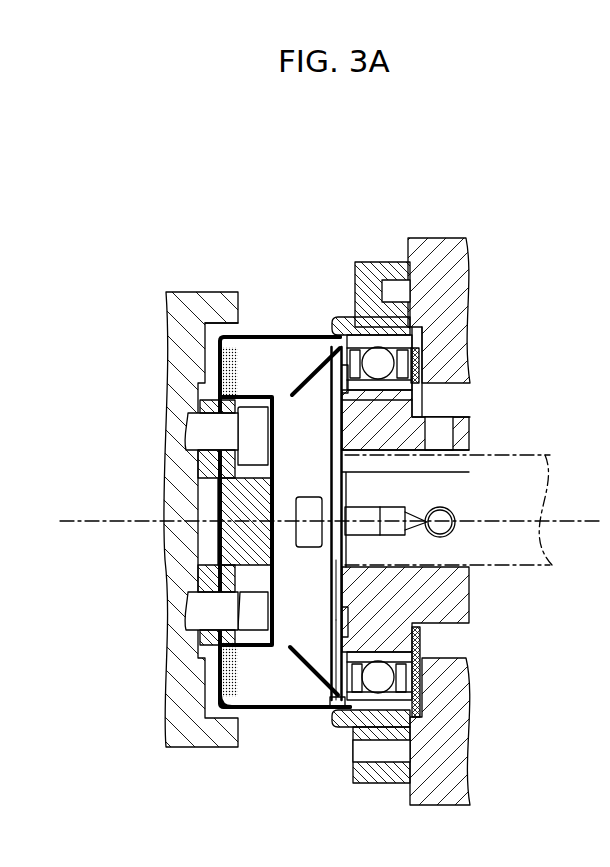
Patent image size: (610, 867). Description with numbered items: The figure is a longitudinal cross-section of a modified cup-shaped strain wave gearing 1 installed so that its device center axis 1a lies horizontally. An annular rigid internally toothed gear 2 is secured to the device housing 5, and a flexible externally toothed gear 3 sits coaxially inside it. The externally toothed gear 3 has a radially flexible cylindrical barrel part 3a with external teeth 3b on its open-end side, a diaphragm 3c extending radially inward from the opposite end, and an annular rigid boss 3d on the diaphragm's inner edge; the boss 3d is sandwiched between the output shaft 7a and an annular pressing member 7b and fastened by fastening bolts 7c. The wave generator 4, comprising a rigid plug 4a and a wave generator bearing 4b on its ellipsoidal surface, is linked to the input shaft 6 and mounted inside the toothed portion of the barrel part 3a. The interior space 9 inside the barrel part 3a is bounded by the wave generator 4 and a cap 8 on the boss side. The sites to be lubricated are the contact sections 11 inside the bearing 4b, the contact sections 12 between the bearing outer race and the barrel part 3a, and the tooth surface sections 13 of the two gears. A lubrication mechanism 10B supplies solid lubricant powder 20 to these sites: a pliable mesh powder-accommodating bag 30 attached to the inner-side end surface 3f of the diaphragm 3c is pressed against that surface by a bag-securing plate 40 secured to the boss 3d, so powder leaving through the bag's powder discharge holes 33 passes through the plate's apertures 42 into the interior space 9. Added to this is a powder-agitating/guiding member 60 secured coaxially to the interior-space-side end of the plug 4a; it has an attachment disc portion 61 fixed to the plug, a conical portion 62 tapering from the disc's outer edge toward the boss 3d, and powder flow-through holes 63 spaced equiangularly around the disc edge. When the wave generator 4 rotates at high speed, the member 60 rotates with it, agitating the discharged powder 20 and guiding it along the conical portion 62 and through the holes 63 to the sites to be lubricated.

The strain wave gearing 1 is at (301, 276).
The device center axis 1a is at (75, 524).
The rigid internally toothed gear 2 is at (334, 304).
The flexible externally toothed gear 3 is at (288, 318).
The cylindrical barrel part 3a is at (267, 340).
The external teeth 3b is at (392, 333).
The diaphragm 3c is at (218, 372).
The rigid boss 3d is at (216, 393).
The inner-side end surface 3f is at (216, 349).
The wave generator 4 is at (452, 408).
The rigid plug 4a is at (401, 408).
The wave generator bearing 4b is at (416, 360).
The device housing 5 is at (448, 236).
The input shaft 6 is at (516, 454).
The output shaft 7a is at (181, 292).
The annular pressing member 7b is at (195, 470).
The fastening bolts 7c is at (210, 441).
The cap 8 is at (215, 507).
The interior space 9 is at (310, 476).
The lubrication mechanism 10B is at (314, 682).
The contact sections in the wave generator 11 is at (414, 660).
The contact sections between wave generator and externally toothed gear 12 is at (410, 705).
The tooth surface sections 13 is at (400, 718).
The solid lubricant powder 20 is at (222, 668).
The powder-accommodating bag 30 is at (213, 692).
The powder discharge holes 33 is at (222, 707).
The bag-securing plate 40 is at (264, 670).
The apertures 42 is at (250, 677).
The powder-agitating/guiding member 60 is at (332, 707).
The attachment disc portion 61 is at (332, 606).
The conical portion 62 is at (320, 660).
The powder flow-through holes 63 is at (320, 676).